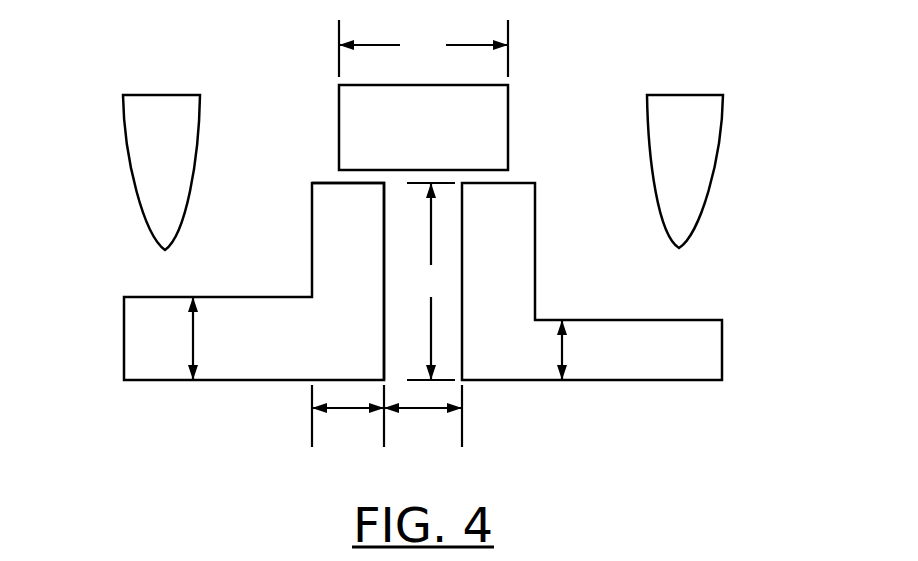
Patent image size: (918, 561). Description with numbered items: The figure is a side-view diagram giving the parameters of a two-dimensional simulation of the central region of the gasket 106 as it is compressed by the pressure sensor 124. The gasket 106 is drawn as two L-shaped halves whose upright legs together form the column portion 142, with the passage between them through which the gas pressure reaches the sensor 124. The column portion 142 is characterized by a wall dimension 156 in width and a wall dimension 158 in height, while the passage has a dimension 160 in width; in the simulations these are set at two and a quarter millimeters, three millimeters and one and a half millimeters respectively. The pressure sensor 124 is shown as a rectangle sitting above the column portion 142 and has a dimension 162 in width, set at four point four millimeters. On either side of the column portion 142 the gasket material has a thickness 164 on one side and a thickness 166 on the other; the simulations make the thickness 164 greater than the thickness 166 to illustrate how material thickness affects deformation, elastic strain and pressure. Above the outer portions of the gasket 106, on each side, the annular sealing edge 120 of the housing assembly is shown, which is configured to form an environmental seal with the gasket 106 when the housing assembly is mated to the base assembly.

The gasket 106 is at (123, 332).
The annular sealing edge 120 is at (157, 93).
The pressure sensor 124 is at (339, 122).
The column portion 142 is at (311, 243).
The wall dimension 156 is at (348, 418).
The wall dimension 158 is at (431, 281).
The dimension 160 is at (423, 418).
The dimension 162 is at (423, 48).
The material thickness 164 is at (216, 338).
The material thickness 166 is at (586, 350).